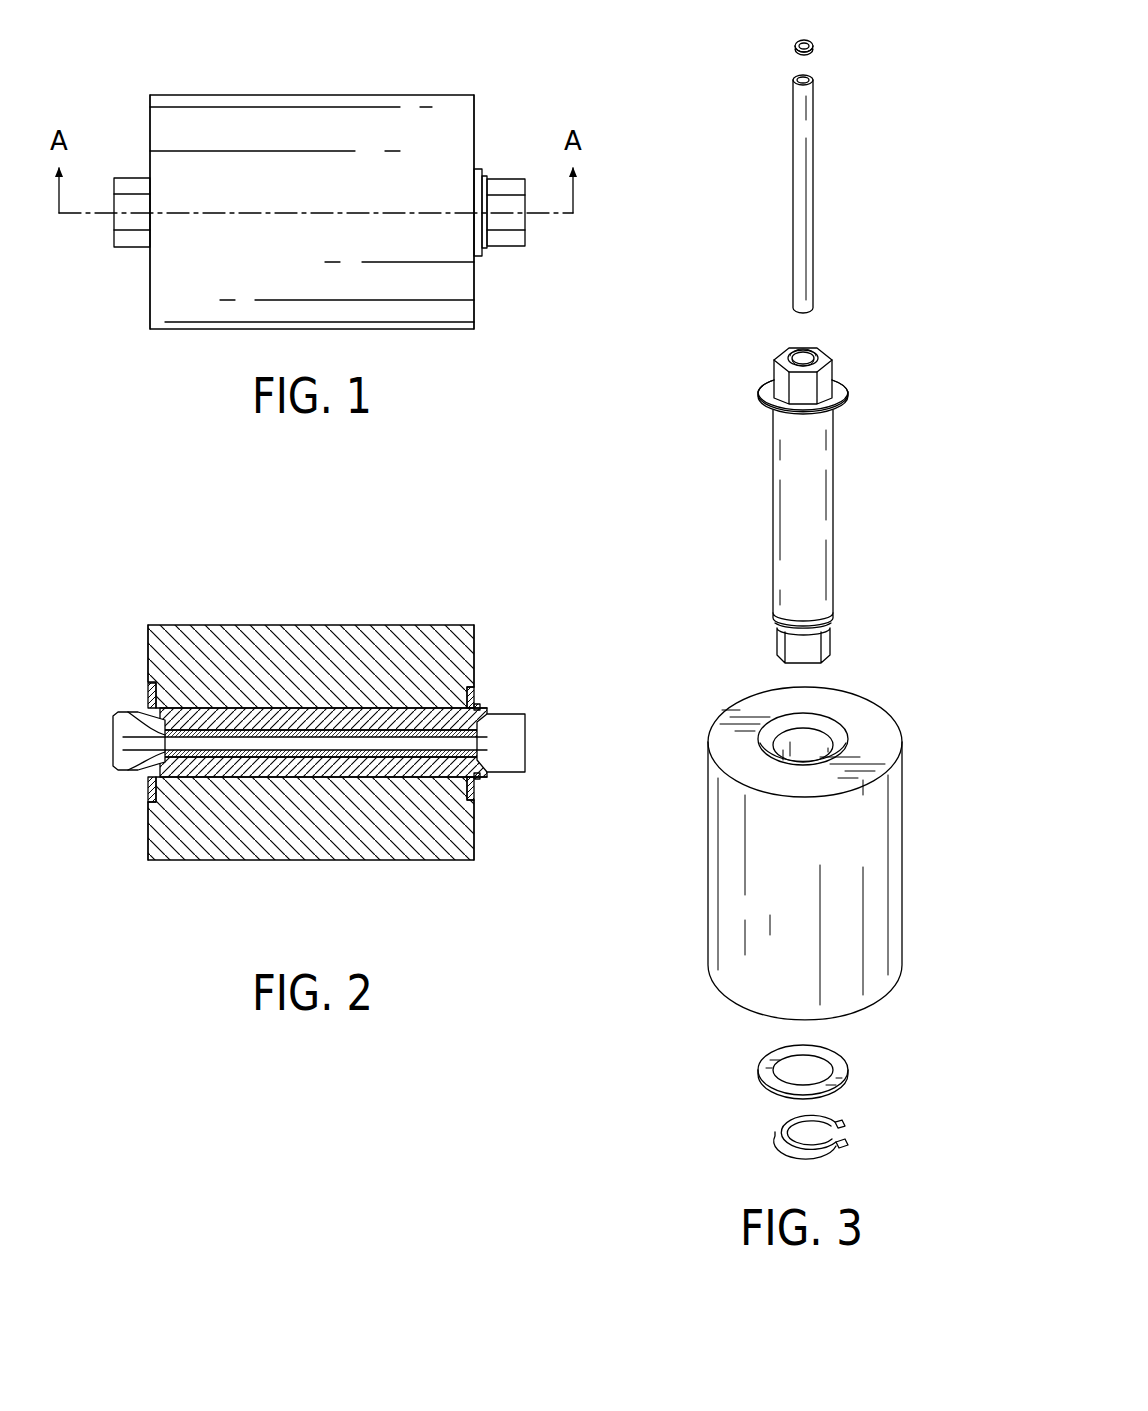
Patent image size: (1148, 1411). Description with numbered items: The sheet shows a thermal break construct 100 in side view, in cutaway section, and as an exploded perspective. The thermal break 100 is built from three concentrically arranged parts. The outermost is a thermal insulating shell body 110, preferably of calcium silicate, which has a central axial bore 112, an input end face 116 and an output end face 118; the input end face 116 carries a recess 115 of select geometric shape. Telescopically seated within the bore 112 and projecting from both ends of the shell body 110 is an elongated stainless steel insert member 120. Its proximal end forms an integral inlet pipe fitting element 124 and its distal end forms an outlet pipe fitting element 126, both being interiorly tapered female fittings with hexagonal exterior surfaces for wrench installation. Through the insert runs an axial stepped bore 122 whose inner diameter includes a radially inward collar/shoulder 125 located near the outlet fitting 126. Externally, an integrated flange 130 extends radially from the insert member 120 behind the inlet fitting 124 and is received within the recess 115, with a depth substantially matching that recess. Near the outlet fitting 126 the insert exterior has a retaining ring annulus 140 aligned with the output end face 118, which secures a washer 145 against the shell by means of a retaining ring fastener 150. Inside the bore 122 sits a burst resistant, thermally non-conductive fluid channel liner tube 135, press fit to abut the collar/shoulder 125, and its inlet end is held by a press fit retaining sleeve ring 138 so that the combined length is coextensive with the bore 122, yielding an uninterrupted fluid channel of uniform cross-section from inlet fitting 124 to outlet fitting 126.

In FIG. 1, the thermal break construct 100 is at (381, 66).
In FIG. 1, the thermal insulating outer shell body 110 is at (219, 95).
In FIG. 2, the thermal insulating outer shell body 110 is at (410, 860).
In FIG. 3, the thermal insulating outer shell body 110 is at (728, 930).
In FIG. 3, the central axially oriented bore 112 is at (786, 745).
In FIG. 3, the recess 115 is at (836, 735).
In FIG. 1, the input end face 116 is at (148, 329).
In FIG. 2, the input end face 116 is at (147, 842).
In FIG. 3, the input end face 116 is at (750, 773).
In FIG. 1, the output end face 118 is at (474, 318).
In FIG. 2, the output end face 118 is at (474, 850).
In FIG. 2, the elongated insert member 120 is at (305, 708).
In FIG. 3, the elongated insert member 120 is at (818, 503).
In FIG. 2, the axial stepped bore 122 is at (263, 757).
In FIG. 1, the inlet pipe fitting element 124 is at (122, 249).
In FIG. 2, the inlet pipe fitting element 124 is at (123, 745).
In FIG. 3, the inlet pipe fitting element 124 is at (785, 353).
In FIG. 2, the collar/shoulder 125 is at (470, 733).
In FIG. 1, the outlet pipe fitting element 126 is at (525, 236).
In FIG. 2, the outlet pipe fitting element 126 is at (527, 737).
In FIG. 3, the outlet pipe fitting element 126 is at (778, 636).
In FIG. 2, the flange 130 is at (147, 690).
In FIG. 3, the flange 130 is at (843, 387).
In FIG. 2, the fluid channel liner tube 135 is at (170, 735).
In FIG. 3, the fluid channel liner tube 135 is at (815, 192).
In FIG. 2, the retaining sleeve ring 138 is at (135, 765).
In FIG. 3, the retaining sleeve ring 138 is at (814, 46).
In FIG. 3, the retaining ring annulus 140 is at (835, 615).
In FIG. 2, the washer 145 is at (474, 692).
In FIG. 3, the washer 145 is at (846, 1063).
In FIG. 2, the retaining ring fastener 150 is at (480, 778).
In FIG. 3, the retaining ring fastener 150 is at (775, 1133).